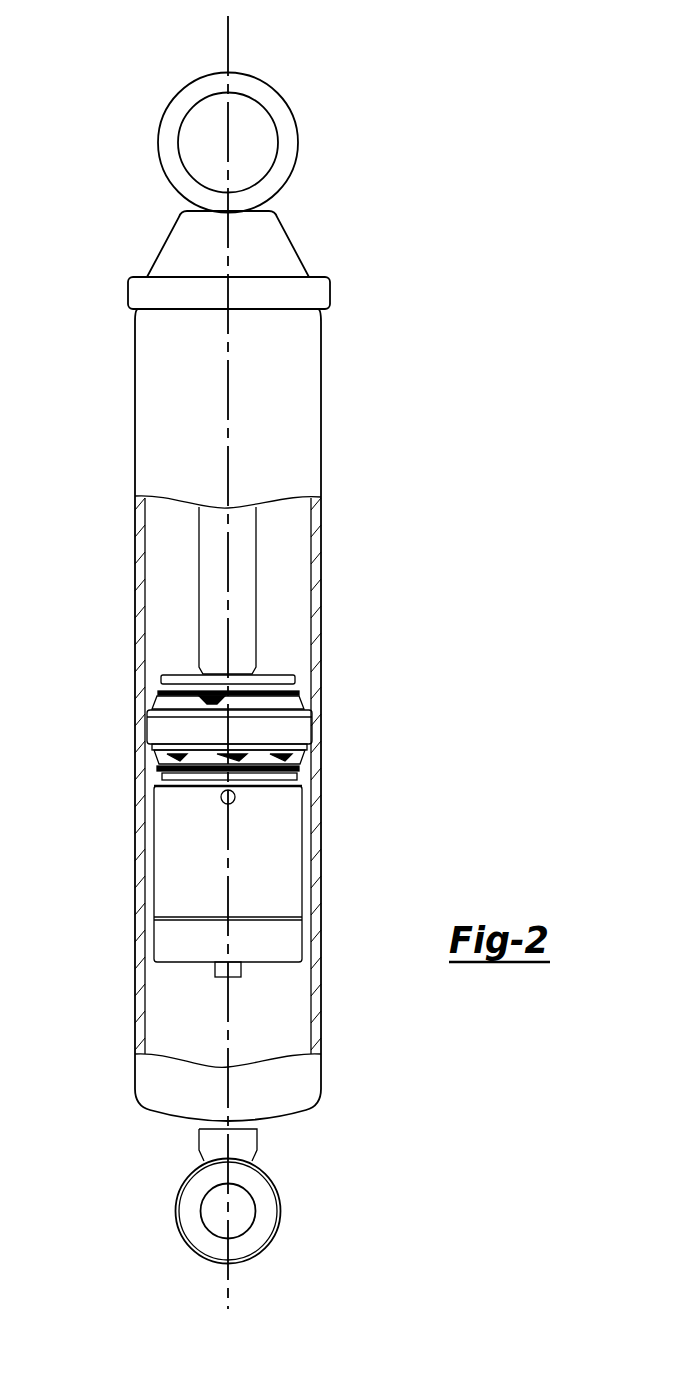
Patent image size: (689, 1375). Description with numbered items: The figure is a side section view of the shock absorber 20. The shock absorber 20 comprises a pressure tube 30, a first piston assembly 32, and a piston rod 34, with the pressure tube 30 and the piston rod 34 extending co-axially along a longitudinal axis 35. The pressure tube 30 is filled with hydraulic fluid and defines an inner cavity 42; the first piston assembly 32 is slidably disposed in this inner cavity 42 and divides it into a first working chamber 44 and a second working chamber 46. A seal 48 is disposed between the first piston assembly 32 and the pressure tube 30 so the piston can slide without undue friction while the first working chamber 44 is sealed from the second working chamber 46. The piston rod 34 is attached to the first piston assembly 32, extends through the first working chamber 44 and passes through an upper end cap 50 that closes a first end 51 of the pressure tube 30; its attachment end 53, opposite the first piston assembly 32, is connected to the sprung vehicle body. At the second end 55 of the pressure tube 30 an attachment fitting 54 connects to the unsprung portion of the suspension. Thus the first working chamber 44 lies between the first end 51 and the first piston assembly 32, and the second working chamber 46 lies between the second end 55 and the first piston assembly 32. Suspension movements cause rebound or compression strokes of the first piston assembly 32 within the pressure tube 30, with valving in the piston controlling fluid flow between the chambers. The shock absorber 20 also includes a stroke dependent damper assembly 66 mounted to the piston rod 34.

The shock absorber 20 is at (274, 658).
The pressure tube 30 is at (133, 552).
The first piston assembly 32 is at (252, 694).
The piston rod 34 is at (235, 515).
The longitudinal axis 35 is at (226, 30).
The inner cavity 42 is at (300, 568).
The first working chamber 44 is at (262, 538).
The second working chamber 46 is at (258, 1005).
The seal 48 is at (298, 710).
The upper end cap 50 is at (187, 237).
The first end 51 is at (327, 380).
The attachment end 53 is at (280, 110).
The attachment fitting 54 is at (275, 1193).
The second end 55 is at (297, 1128).
The stroke dependent damper assembly 66 is at (300, 770).